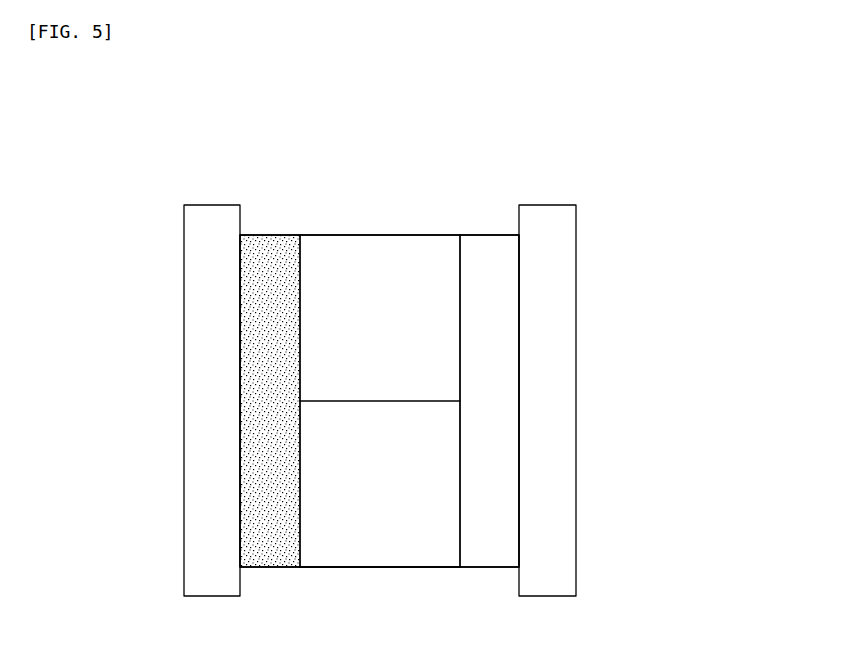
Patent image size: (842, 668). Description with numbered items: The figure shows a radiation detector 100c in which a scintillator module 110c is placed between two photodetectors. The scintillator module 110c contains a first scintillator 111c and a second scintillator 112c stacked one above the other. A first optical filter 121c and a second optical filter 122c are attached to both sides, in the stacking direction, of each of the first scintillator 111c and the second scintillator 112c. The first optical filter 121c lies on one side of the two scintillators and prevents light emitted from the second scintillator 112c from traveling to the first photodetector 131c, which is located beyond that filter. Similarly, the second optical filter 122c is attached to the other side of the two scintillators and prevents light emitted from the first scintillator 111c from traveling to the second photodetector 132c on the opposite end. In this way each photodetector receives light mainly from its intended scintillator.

The radiation detector 100c is at (593, 182).
The scintillator module 110c is at (348, 223).
The first scintillator 111c is at (395, 250).
The second scintillator 112c is at (378, 553).
The first optical filter 121c is at (272, 252).
The second optical filter 122c is at (488, 250).
The first photodetector 131c is at (203, 392).
The second photodetector 132c is at (557, 397).